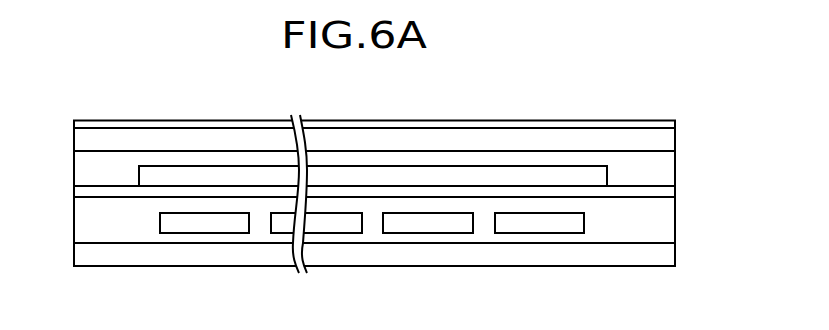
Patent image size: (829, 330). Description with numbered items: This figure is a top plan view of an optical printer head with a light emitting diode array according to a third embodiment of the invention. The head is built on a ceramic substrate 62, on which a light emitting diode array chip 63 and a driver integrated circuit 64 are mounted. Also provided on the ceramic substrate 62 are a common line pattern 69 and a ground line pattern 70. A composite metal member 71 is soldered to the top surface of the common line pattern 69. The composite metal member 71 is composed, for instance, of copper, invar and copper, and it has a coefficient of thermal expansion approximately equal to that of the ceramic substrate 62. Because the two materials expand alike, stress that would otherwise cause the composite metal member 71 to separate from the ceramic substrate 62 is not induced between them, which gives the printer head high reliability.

The ceramic substrate 62 is at (663, 253).
The light emitting diode array chip 63 is at (171, 172).
The driver integrated circuit 64 is at (205, 233).
The common line pattern 69 is at (628, 160).
The ground line pattern 70 is at (263, 235).
The composite metal member 71 is at (247, 137).